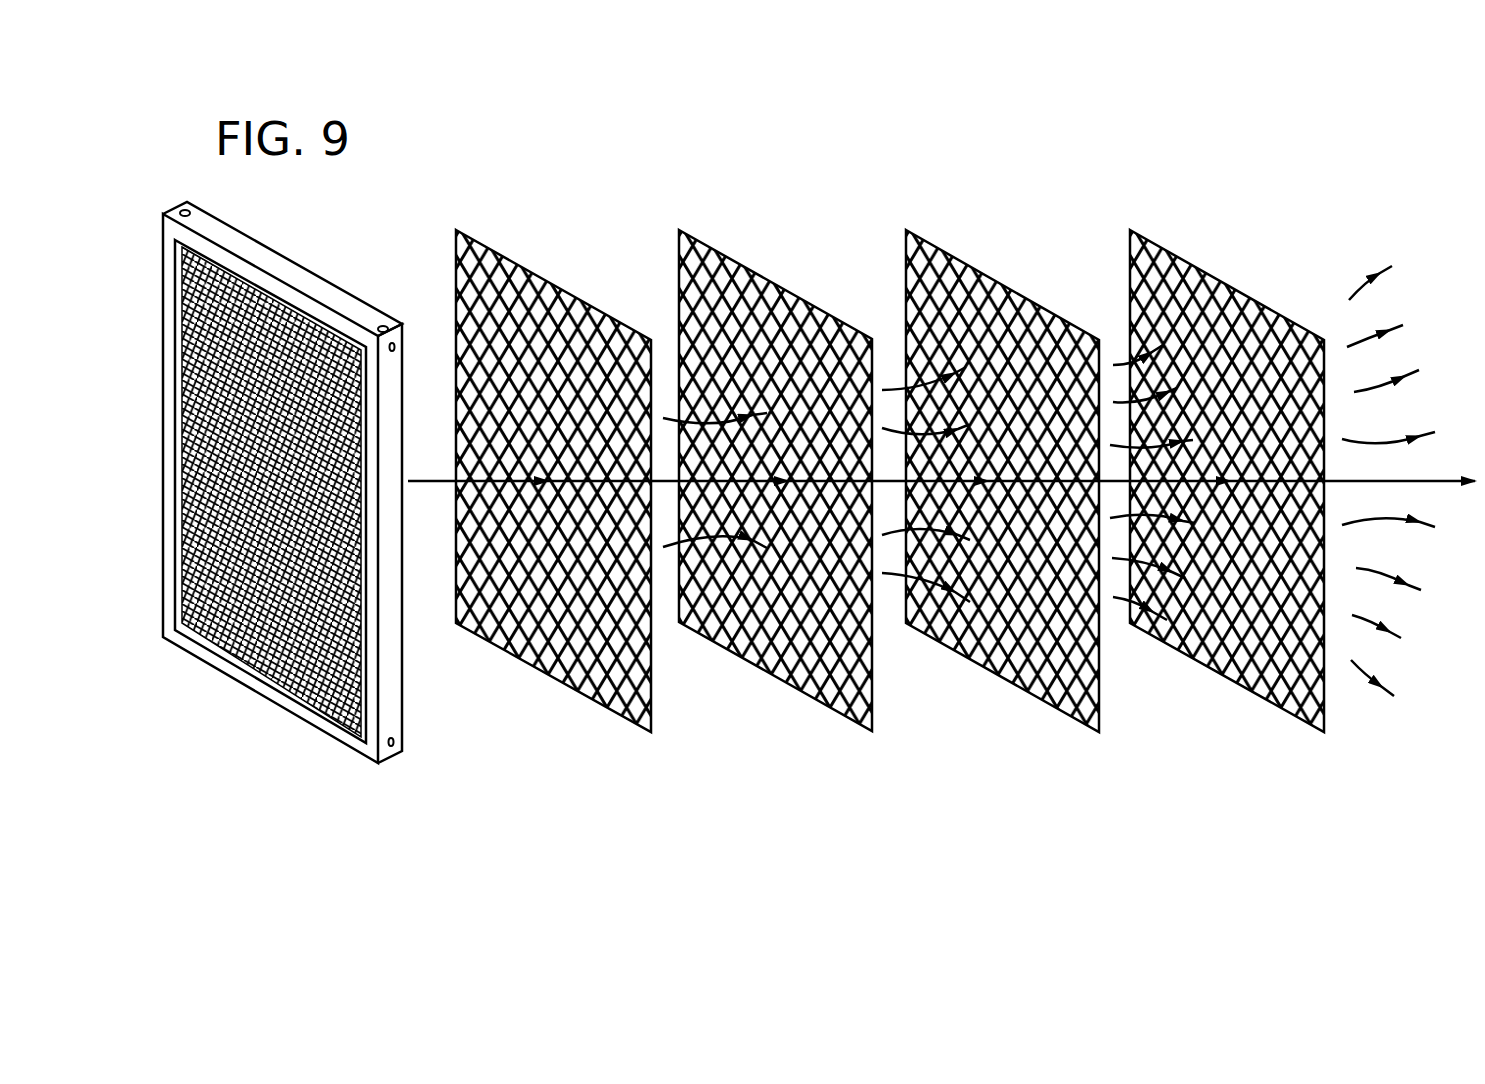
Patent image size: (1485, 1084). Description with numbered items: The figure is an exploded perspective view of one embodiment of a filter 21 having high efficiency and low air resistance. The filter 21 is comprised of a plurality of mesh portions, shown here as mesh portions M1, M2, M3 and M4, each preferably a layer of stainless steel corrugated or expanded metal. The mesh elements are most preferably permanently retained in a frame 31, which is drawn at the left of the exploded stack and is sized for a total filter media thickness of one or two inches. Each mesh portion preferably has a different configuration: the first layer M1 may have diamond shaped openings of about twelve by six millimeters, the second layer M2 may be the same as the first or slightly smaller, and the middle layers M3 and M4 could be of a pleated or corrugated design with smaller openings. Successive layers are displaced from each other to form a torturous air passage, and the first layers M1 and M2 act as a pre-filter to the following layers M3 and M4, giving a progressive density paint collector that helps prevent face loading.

The filter 21 is at (323, 482).
The frame 31 is at (397, 702).
The mesh portion M1 is at (585, 296).
The mesh portion M2 is at (805, 293).
The mesh portion M3 is at (1037, 297).
The mesh portion M4 is at (1260, 302).